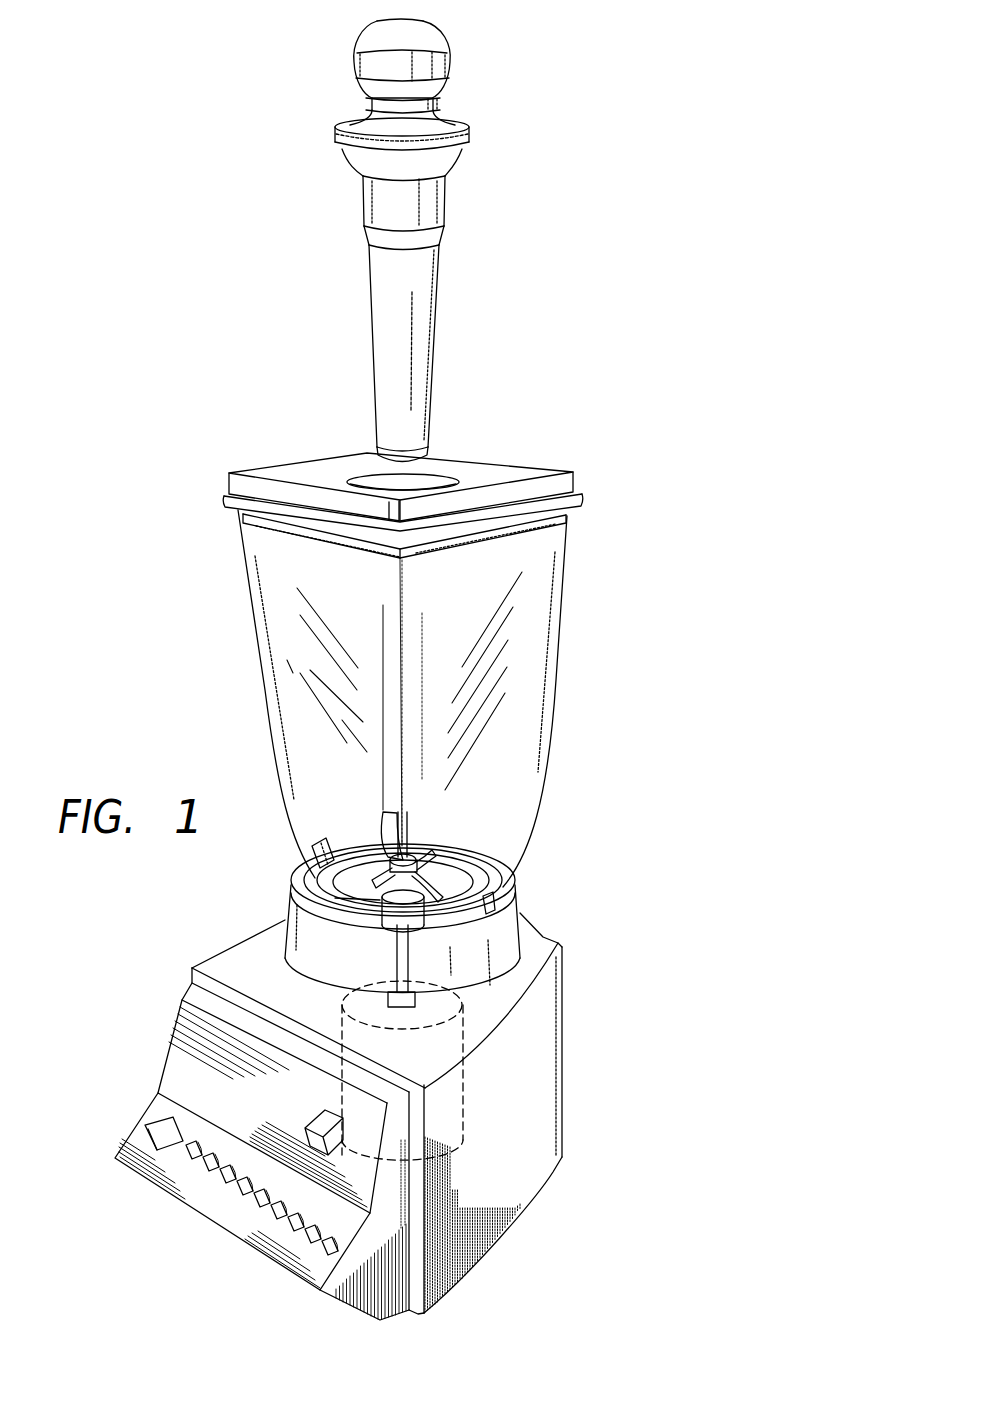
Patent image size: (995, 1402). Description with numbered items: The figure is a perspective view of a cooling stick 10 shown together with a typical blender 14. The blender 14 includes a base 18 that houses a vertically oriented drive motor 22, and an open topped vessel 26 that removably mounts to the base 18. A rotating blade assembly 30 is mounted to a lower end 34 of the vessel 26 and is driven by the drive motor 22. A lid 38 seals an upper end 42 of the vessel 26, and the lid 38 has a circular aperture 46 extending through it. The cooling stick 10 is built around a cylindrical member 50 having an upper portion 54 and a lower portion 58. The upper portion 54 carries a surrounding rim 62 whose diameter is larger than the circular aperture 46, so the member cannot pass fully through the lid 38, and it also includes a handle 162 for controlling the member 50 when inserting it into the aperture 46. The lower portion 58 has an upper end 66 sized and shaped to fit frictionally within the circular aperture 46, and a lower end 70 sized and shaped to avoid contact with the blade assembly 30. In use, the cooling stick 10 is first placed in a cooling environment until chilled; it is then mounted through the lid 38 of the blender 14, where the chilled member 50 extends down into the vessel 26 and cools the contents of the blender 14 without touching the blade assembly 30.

The cooling stick 10 is at (522, 191).
The blender 14 is at (584, 897).
The base 18 is at (545, 1062).
The drive motor 22 is at (455, 1095).
The open topped vessel 26 is at (525, 652).
The rotating blade assembly 30 is at (397, 833).
The lower end 34 is at (497, 890).
The lid 38 is at (507, 470).
The upper end 42 is at (568, 515).
The circular aperture 46 is at (373, 480).
The cylindrical member 50 is at (356, 287).
The upper portion 54 is at (440, 118).
The lower portion 58 is at (420, 337).
The surrounding rim 62 is at (463, 135).
The upper end 66 is at (428, 195).
The lower end 70 is at (415, 440).
The handle 162 is at (377, 34).